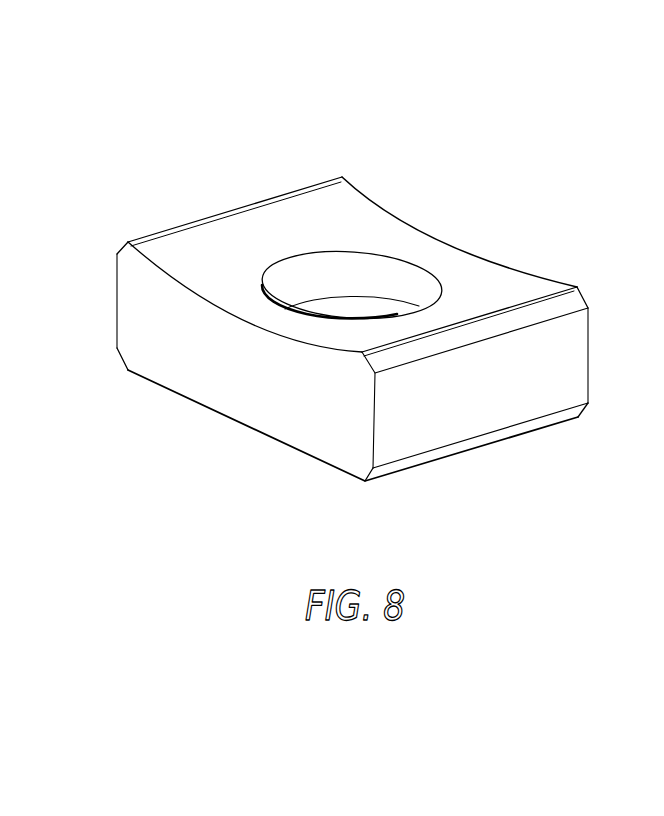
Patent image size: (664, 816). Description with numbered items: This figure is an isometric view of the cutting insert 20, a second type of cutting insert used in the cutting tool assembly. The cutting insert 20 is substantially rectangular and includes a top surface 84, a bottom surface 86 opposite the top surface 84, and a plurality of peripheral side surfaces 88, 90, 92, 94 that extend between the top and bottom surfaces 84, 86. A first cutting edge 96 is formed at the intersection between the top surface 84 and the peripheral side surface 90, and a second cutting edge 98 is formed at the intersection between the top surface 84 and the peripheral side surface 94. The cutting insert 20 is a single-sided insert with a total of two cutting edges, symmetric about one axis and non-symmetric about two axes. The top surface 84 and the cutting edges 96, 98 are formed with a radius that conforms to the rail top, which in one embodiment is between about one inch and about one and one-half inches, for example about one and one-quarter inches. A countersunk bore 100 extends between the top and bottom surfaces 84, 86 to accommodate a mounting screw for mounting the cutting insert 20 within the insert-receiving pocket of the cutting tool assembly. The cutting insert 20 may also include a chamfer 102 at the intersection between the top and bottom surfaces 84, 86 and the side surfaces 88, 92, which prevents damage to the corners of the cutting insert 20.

The cutting insert 20 is at (361, 303).
The top surface 84 is at (396, 277).
The bottom surface 86 is at (270, 442).
The peripheral side surface 88 is at (468, 416).
The peripheral side surface 90 is at (448, 237).
The peripheral side surface 92 is at (283, 187).
The peripheral side surface 94 is at (177, 365).
The first cutting edge 96 is at (398, 222).
The second cutting edge 98 is at (252, 323).
The countersunk bore 100 is at (297, 278).
The chamfer 102 is at (124, 245).